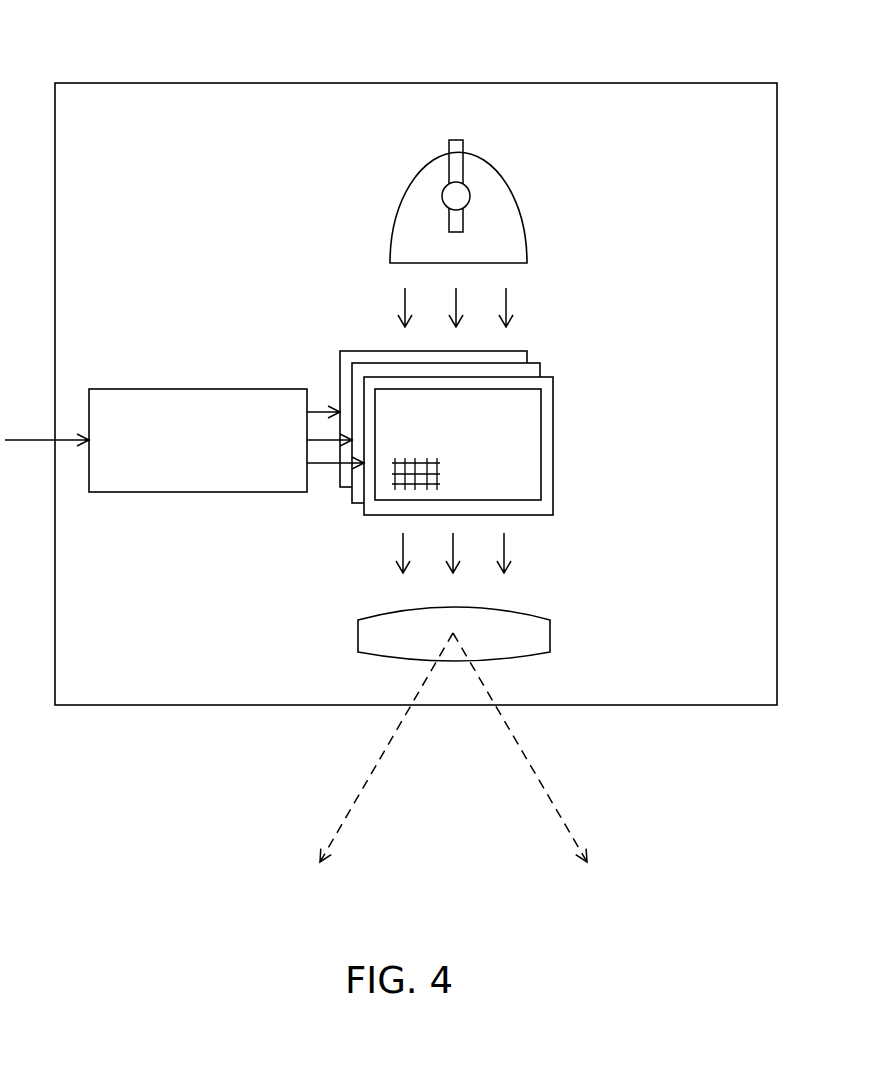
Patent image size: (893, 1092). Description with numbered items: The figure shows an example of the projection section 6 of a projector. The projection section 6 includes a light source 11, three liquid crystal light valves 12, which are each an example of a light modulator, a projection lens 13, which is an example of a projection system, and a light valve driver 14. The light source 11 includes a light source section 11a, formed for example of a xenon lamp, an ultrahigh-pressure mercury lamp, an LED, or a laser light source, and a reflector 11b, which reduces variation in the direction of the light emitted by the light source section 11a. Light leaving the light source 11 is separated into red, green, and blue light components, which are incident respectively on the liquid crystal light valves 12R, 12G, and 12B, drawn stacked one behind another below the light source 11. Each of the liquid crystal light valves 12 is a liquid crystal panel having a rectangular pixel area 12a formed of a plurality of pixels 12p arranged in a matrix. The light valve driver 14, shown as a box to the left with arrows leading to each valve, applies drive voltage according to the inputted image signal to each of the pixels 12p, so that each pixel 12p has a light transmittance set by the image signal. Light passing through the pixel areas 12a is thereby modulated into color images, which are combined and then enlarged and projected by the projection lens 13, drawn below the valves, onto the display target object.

The projection section 6 is at (107, 83).
The light source 11 is at (430, 190).
The light source section 11a is at (450, 196).
The reflector 11b is at (505, 183).
The liquid crystal light valves 12 is at (522, 439).
The liquid crystal light valve (blue) 12B is at (524, 353).
The liquid crystal light valve (green) 12G is at (540, 368).
The liquid crystal light valve (red) 12R is at (547, 420).
The pixel area 12a is at (518, 466).
The pixels 12p is at (392, 478).
The projection lens 13 is at (375, 633).
The light valve driver 14 is at (238, 389).